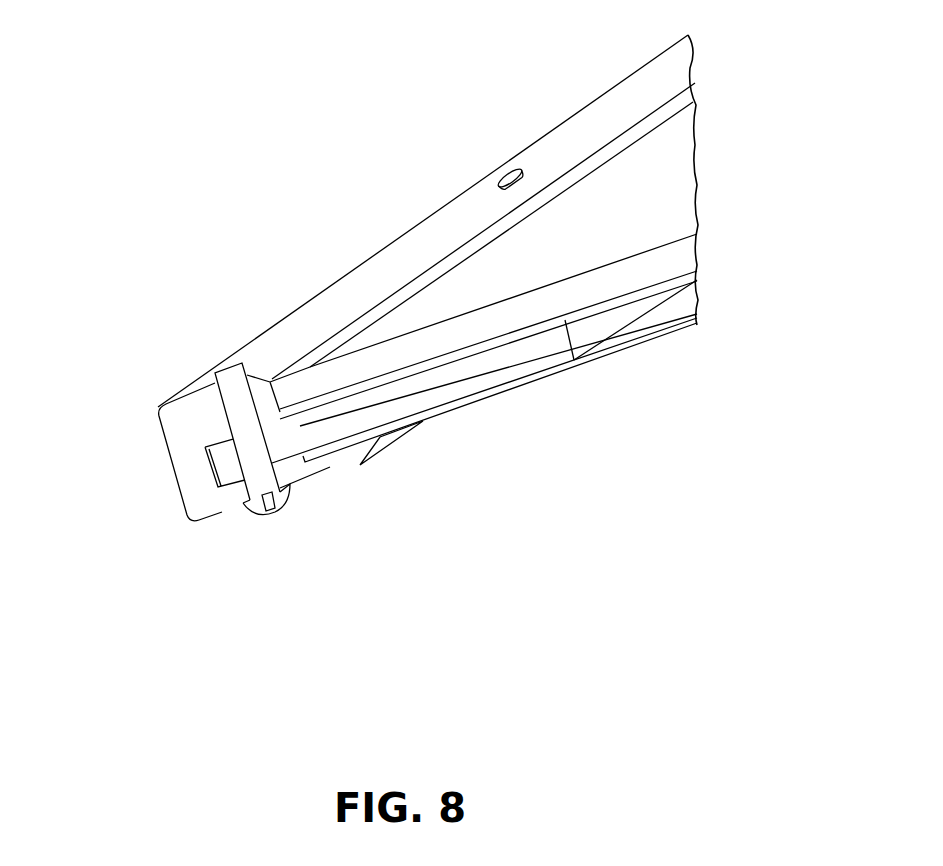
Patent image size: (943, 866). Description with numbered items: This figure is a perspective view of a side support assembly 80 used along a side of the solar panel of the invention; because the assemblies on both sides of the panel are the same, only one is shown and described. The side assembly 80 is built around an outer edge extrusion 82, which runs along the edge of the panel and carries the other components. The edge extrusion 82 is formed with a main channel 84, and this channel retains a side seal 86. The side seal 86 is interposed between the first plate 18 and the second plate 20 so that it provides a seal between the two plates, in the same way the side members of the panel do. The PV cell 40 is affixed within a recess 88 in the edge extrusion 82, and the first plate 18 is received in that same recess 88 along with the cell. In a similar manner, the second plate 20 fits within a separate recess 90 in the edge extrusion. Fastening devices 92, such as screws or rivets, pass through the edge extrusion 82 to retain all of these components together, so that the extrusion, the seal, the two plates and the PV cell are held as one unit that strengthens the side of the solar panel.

The side support assembly 80 is at (313, 176).
The first plate 18 is at (307, 402).
The fastening devices 92 is at (508, 172).
The PV cell 40 is at (640, 273).
The second plate 20 is at (545, 373).
The side seal 86 is at (422, 393).
The recess 88 is at (280, 378).
The recess 90 is at (341, 452).
The outer edge extrusion 82 is at (183, 432).
The main channel 84 is at (227, 493).